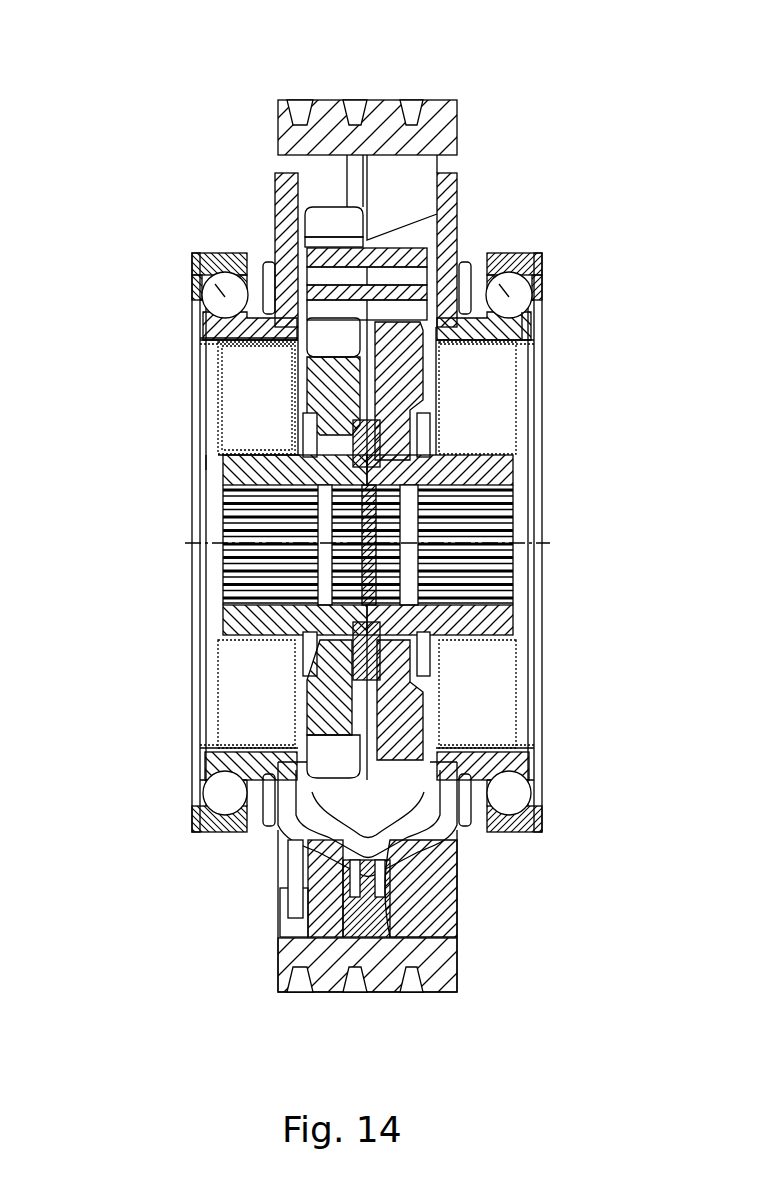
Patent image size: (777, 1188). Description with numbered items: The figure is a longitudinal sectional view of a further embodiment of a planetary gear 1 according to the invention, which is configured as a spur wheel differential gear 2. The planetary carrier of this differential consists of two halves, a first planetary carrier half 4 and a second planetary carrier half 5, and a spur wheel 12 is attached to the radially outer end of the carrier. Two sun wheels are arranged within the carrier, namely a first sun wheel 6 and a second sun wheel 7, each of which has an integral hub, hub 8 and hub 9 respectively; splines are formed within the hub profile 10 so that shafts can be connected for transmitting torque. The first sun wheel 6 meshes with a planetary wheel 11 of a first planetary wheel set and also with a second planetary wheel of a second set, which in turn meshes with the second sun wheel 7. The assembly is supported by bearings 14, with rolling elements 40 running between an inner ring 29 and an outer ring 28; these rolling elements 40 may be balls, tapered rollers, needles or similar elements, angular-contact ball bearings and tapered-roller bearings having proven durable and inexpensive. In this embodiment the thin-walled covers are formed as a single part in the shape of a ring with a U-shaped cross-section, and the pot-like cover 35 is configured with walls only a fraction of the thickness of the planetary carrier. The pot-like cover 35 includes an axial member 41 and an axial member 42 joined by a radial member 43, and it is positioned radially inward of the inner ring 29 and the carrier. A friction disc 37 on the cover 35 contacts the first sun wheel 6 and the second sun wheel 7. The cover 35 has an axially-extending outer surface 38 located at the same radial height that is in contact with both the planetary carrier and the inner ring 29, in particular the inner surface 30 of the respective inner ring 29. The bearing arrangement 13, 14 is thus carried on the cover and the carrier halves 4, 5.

The planetary gear 1 is at (343, 500).
The spur wheel differential gear 2 is at (343, 546).
The first planetary carrier half 4 is at (277, 195).
The second planetary carrier half 5 is at (457, 227).
The first sun wheel 6 is at (333, 387).
The second sun wheel 7 is at (420, 677).
The hub 8 is at (220, 614).
The hub 9 is at (497, 612).
The hub profile 10 is at (228, 530).
The planetary wheel 11 is at (275, 345).
The spur wheel 12 is at (437, 130).
The bearing 13 is at (370, 514).
The bearing 14 is at (370, 479).
The outer ring 28 is at (542, 262).
The inner ring 29 is at (193, 323).
The inner surface 30 is at (195, 345).
The pot-like cover 35 is at (455, 400).
The friction disc 37 is at (428, 433).
The axially-extending outer surface 38 is at (527, 323).
The rolling element 40 is at (513, 295).
The axial member 41 is at (293, 373).
The axial member 42 is at (262, 468).
The radial member 43 is at (293, 407).